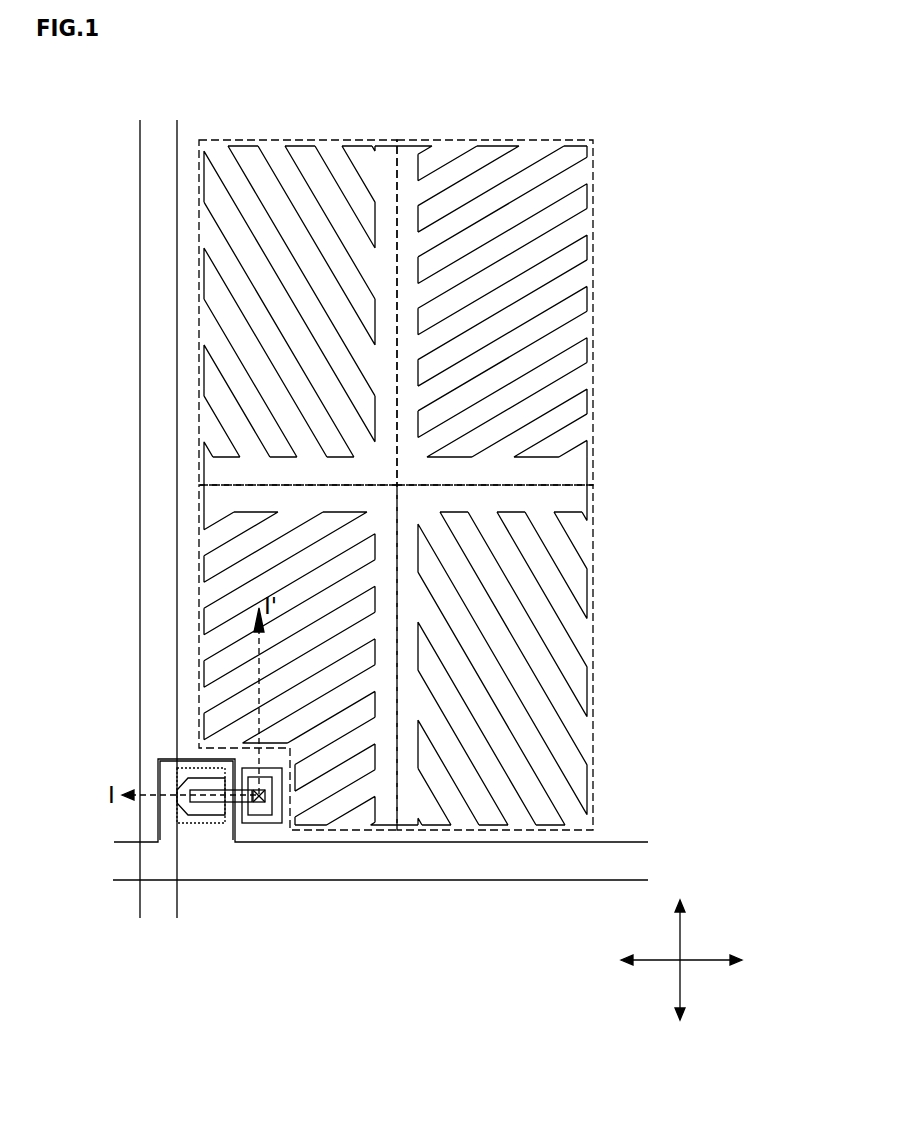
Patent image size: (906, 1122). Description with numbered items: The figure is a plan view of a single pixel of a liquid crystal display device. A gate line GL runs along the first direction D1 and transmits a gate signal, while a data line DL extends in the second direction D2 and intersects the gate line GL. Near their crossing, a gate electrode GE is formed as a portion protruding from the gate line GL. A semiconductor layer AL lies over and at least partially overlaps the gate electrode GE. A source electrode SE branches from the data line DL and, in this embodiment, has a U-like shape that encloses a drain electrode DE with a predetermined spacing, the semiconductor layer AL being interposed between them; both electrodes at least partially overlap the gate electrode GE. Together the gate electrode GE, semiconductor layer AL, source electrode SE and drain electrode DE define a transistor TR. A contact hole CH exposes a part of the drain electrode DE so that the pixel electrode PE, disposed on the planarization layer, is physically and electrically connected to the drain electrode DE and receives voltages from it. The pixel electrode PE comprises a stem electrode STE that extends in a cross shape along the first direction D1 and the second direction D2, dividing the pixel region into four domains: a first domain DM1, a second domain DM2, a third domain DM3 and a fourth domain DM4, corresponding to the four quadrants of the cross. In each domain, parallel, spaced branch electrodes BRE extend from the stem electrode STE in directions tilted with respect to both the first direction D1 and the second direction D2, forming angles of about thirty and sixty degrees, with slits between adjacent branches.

The first domain DM1 is at (578, 140).
The second domain DM2 is at (216, 140).
The third domain DM3 is at (199, 652).
The fourth domain DM4 is at (596, 740).
The data line DL is at (140, 300).
The gate line GL is at (131, 865).
The pixel electrode PE is at (523, 485).
The branch electrodes BRE is at (503, 485).
The stem electrode STE is at (577, 503).
The transistor TR is at (237, 885).
The gate electrode GE is at (190, 836).
The source electrode SE is at (201, 822).
The semiconductor layer AL is at (214, 818).
The drain electrode DE is at (224, 803).
The contact hole CH is at (266, 799).
The first direction D1 is at (698, 960).
The second direction D2 is at (679, 975).